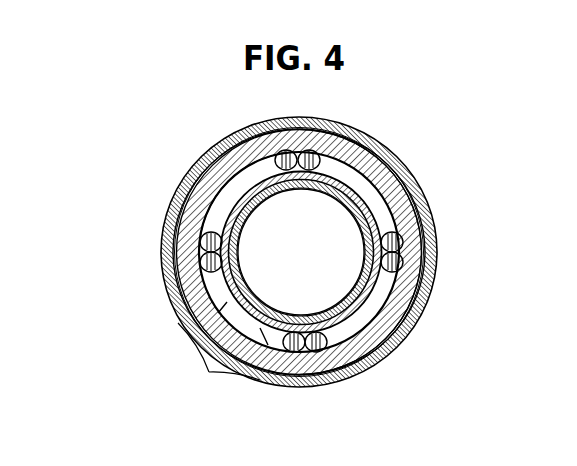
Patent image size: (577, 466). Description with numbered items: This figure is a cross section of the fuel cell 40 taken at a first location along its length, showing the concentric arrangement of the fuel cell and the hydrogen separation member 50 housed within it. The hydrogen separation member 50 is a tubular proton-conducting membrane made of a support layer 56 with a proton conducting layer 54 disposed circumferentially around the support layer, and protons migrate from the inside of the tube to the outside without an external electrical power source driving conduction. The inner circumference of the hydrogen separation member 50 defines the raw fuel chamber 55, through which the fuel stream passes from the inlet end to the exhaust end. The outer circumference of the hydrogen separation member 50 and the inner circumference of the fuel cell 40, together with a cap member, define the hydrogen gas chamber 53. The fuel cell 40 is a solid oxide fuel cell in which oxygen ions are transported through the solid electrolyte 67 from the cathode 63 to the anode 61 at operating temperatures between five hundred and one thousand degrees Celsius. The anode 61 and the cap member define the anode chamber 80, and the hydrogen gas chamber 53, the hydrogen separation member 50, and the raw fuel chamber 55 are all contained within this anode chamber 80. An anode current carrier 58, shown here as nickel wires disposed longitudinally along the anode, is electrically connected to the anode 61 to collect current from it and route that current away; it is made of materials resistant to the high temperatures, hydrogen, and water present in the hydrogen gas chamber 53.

The fuel cell 40 is at (163, 202).
The hydrogen separation member 50 is at (371, 310).
The hydrogen gas chamber 53 is at (187, 314).
The proton conducting layer 54 is at (226, 352).
The raw fuel chamber 55 is at (413, 183).
The support layer 56 is at (337, 243).
The anode current carrier 58 is at (206, 263).
The anode 61 is at (415, 288).
The cathode 63 is at (418, 190).
The solid electrolyte 67 is at (431, 233).
The anode chamber 80 is at (222, 179).